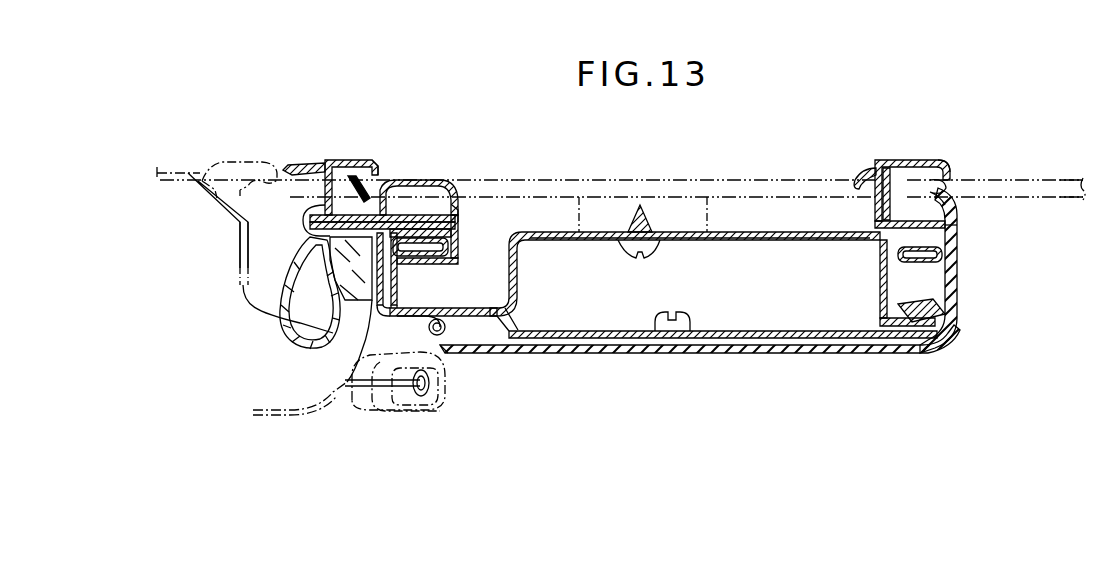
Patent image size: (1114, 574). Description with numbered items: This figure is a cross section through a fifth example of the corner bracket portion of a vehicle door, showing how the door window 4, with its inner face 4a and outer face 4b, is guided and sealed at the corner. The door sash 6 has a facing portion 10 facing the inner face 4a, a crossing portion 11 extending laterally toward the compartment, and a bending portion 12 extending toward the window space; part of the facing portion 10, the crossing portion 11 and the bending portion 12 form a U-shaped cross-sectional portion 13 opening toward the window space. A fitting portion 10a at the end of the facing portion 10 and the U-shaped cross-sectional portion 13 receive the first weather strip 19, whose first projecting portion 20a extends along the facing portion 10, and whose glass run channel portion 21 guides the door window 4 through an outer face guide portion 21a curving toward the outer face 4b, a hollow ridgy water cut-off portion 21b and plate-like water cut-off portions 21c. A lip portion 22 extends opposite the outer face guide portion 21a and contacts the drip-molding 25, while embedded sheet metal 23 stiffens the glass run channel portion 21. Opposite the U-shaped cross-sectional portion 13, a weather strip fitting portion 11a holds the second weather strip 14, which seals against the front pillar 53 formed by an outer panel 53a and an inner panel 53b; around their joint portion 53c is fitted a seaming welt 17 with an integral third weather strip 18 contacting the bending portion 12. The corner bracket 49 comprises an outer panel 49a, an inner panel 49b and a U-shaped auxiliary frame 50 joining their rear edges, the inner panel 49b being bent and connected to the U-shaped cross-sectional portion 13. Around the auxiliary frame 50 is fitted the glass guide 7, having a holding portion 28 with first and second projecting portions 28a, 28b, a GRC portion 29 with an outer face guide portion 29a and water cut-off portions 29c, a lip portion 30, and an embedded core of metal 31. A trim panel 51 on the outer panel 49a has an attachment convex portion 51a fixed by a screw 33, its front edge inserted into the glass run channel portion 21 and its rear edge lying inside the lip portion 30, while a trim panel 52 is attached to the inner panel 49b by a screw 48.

The door window 4 is at (1052, 180).
The inner face of the door window 4a is at (1065, 200).
The outer face of the door window 4b is at (1082, 183).
The door sash 6 is at (373, 333).
The glass guide 7 is at (962, 232).
The facing portion 10 is at (433, 199).
The fitting portion 10a is at (298, 221).
The crossing portion 11 is at (398, 299).
The weather strip fitting portion 11a is at (355, 352).
The bending portion 12 is at (422, 340).
The U-shaped cross-sectional portion 13 is at (422, 248).
The second weather strip 14 is at (277, 325).
The seaming welt 17 is at (413, 410).
The third weather strip 18 is at (438, 350).
The first weather strip 19 is at (462, 246).
The first projecting portion 20a is at (418, 263).
The glass run channel portion 21 is at (335, 163).
The outer face guide portion 21a is at (373, 160).
The hollow and ridgy water cut-off portion 21b is at (420, 181).
The projecting/plate-like water cut-off portions 21c is at (378, 185).
The lip portion 22 is at (285, 168).
The sheet metal 23 is at (460, 212).
The drip-molding 25 is at (219, 163).
The holding portion 28 is at (958, 275).
The first projecting portion 28a is at (942, 262).
The second projecting portion 28b is at (945, 310).
The GRC portion 29 is at (918, 160).
The outer face guide portion 29a is at (946, 165).
The water cut-off portions 29c is at (942, 196).
The lip portion 30 is at (862, 176).
The core of metal 31 is at (892, 170).
The screw 33 is at (648, 250).
The screw 48 is at (682, 318).
The corner bracket 49 is at (776, 230).
The outer panel 49a is at (752, 242).
The inner panel 49b is at (782, 330).
The auxiliary frame 50 is at (880, 286).
The trim panel 51 is at (672, 180).
The attachment convex portion 51a is at (579, 198).
The trim panel 52 is at (731, 354).
The front pillar 53 is at (155, 170).
The outer panel 53a is at (240, 288).
The inner panel 53b is at (275, 402).
The joint portion 53c is at (398, 403).